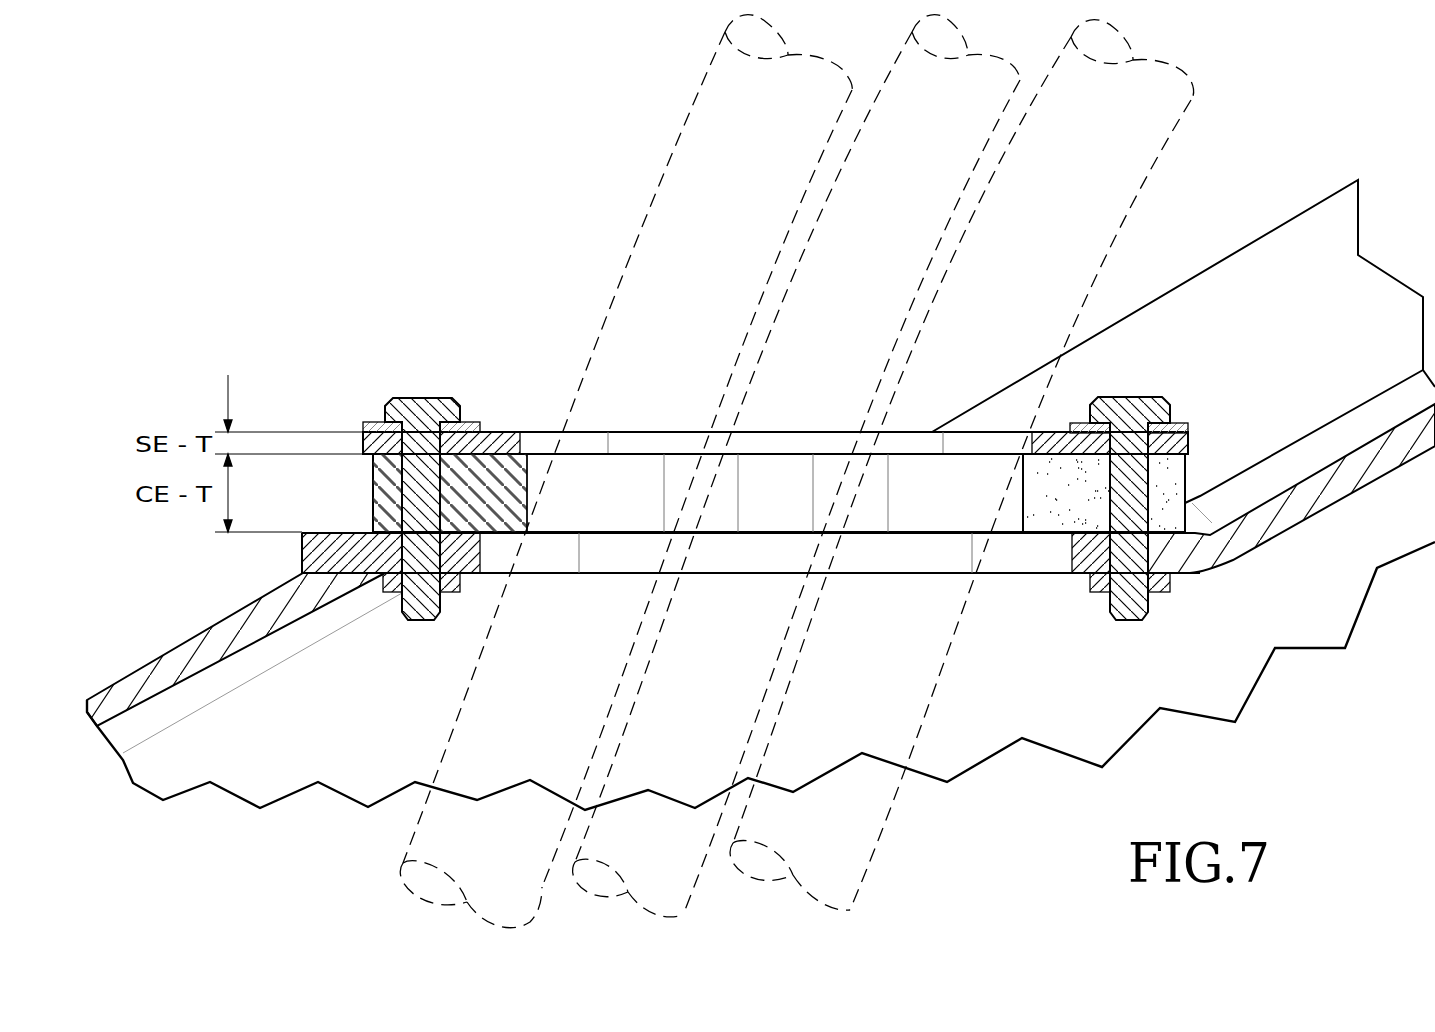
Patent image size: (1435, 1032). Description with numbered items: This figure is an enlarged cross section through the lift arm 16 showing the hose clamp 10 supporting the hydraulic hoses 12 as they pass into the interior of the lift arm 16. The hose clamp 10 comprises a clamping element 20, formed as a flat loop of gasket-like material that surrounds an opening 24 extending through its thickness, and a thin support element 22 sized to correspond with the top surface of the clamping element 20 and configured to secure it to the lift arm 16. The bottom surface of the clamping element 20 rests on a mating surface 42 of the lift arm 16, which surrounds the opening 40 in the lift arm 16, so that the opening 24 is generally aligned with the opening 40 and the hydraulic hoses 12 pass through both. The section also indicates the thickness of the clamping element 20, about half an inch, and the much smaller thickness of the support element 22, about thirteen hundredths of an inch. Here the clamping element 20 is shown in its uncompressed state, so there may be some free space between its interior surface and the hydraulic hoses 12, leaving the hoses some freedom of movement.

The hose clamp 10 is at (389, 342).
The hydraulic hoses 12 is at (633, 194).
The lift arm 16 is at (160, 668).
The clamping element 20 is at (513, 470).
The support element 22 is at (495, 430).
The opening 24 is at (541, 471).
The opening 40 is at (500, 563).
The mating surface 42 is at (347, 530).